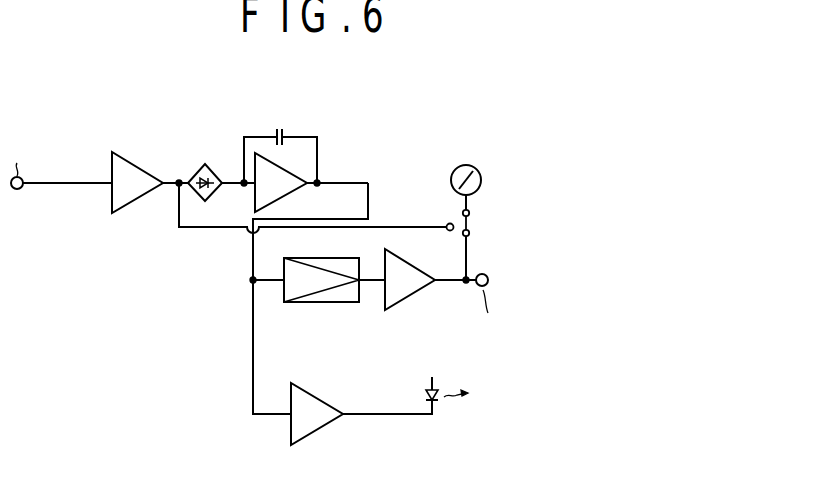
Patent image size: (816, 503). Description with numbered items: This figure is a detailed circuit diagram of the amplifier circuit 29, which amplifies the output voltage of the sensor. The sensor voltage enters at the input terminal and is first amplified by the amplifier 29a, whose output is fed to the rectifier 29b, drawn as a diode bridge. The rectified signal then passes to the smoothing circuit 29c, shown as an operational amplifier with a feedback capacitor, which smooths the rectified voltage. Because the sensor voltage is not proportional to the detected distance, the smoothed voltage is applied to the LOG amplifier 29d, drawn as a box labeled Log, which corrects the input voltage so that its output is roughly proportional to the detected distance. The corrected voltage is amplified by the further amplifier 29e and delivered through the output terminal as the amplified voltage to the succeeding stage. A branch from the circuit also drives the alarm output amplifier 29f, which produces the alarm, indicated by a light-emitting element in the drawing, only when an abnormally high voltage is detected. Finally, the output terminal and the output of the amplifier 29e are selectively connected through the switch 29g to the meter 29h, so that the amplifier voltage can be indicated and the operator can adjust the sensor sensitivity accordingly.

The amplifier circuit 29 is at (393, 113).
The amplifier 29a is at (133, 165).
The rectifier 29b is at (213, 172).
The smoothing circuit 29c is at (321, 165).
The LOG amplifier 29d is at (305, 302).
The amplifier 29e is at (418, 292).
The alarm output amplifier 29f is at (318, 399).
The switch 29g is at (473, 227).
The meter 29h is at (482, 180).